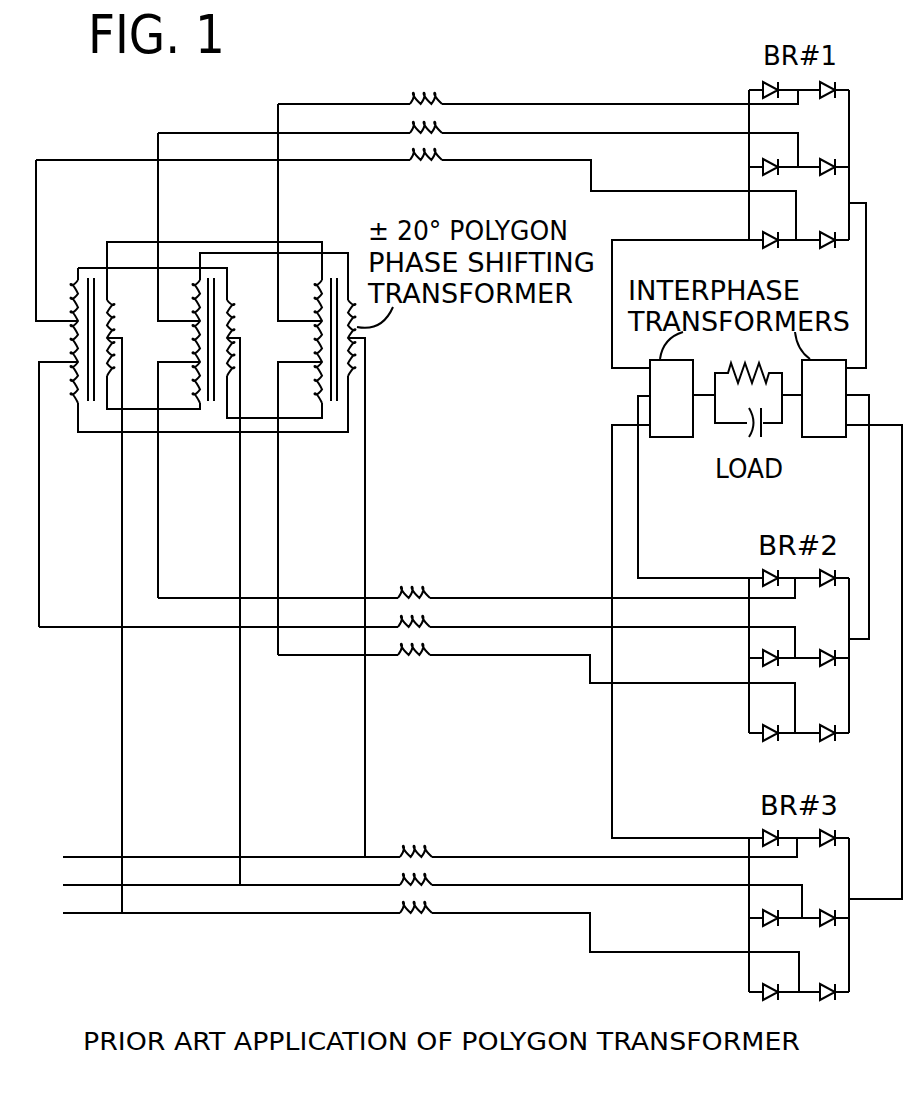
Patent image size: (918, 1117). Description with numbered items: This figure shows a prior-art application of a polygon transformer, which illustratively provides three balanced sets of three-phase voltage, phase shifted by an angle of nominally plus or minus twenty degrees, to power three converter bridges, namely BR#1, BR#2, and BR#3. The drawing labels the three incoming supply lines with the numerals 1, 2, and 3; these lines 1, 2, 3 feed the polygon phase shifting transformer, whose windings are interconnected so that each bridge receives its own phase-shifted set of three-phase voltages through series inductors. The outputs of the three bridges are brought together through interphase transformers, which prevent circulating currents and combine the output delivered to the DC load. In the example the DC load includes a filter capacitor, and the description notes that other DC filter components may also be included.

The phase 1 input line 1 is at (420, 848).
The phase 2 input line 2 is at (422, 891).
The phase 3 input line 3 is at (421, 943).